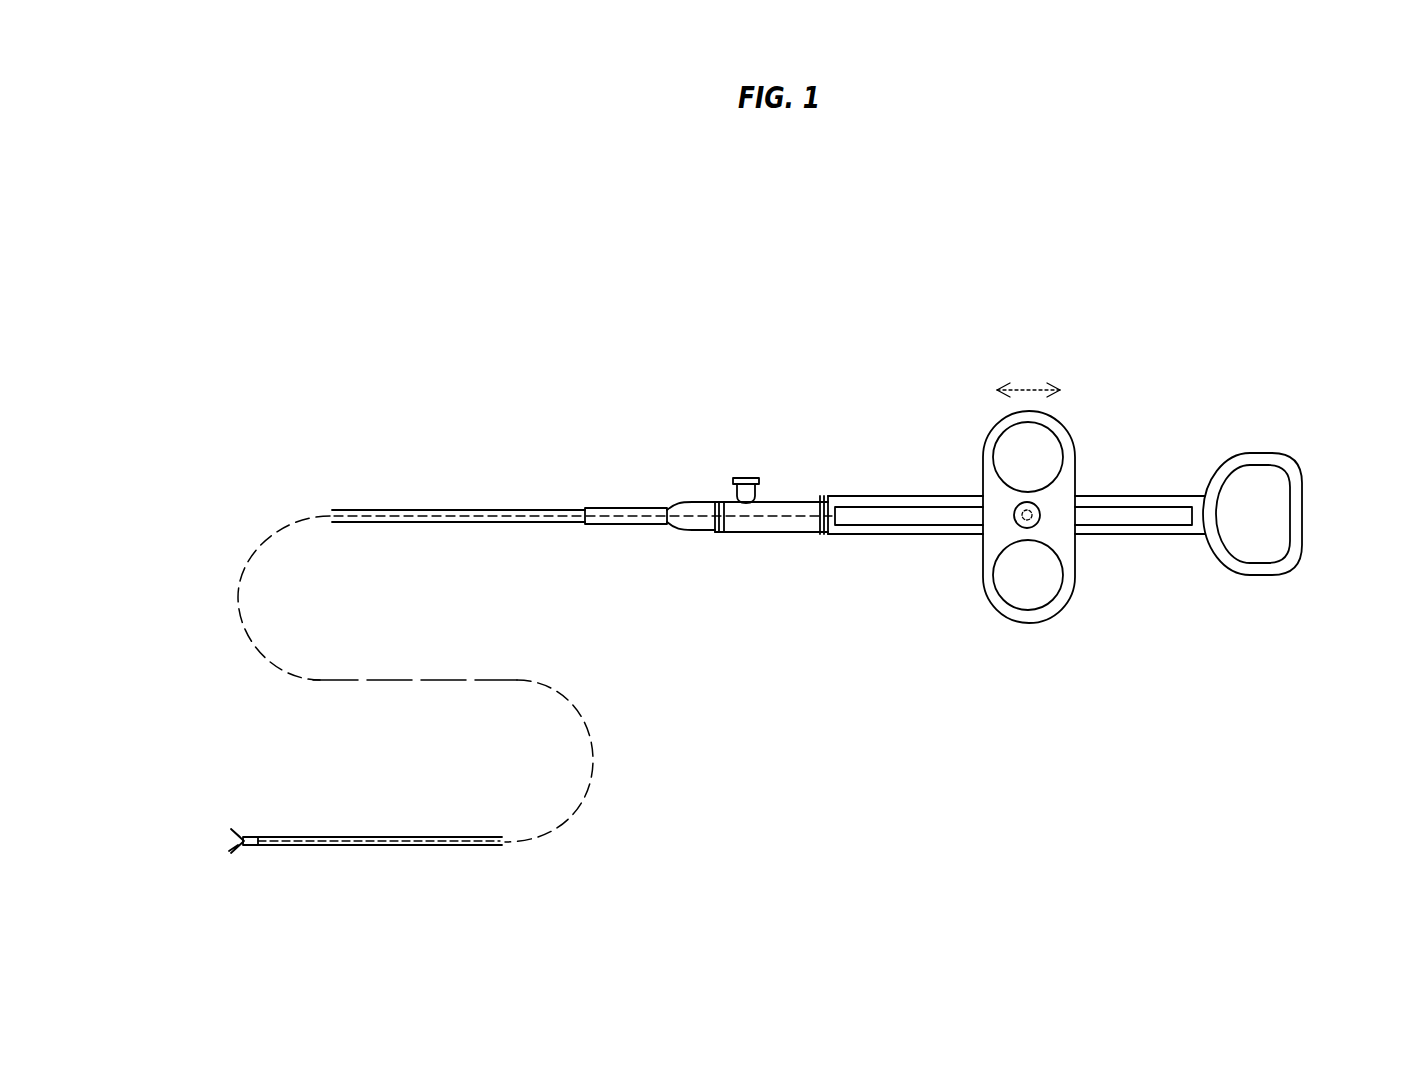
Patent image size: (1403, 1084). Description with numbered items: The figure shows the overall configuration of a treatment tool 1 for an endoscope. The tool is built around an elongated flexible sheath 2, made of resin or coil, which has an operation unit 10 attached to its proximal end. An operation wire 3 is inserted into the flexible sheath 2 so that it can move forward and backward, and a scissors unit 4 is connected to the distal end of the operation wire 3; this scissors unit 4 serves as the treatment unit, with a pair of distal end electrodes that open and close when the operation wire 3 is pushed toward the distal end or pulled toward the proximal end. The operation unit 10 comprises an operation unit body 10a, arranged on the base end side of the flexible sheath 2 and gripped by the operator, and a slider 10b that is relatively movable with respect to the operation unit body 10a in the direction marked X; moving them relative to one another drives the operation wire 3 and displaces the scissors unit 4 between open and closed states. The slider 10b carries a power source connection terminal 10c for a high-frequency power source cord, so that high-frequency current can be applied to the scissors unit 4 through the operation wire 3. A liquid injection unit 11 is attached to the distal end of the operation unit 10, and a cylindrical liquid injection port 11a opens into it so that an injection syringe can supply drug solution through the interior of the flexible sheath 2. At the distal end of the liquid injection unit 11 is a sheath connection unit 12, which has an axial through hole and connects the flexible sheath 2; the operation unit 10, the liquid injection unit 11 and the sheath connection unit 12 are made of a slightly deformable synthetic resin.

The treatment tool 1 is at (1170, 300).
The flexible sheath 2 is at (465, 512).
The operation wire 3 is at (918, 515).
The scissors unit 4 is at (240, 848).
The operation unit 10 is at (1338, 720).
The operation unit body 10a is at (1198, 530).
The slider 10b is at (1020, 622).
The power source connection terminal 10c is at (1017, 518).
The liquid injection unit 11 is at (768, 523).
The liquid injection port 11a is at (737, 475).
The sheath connection unit 12 is at (690, 525).